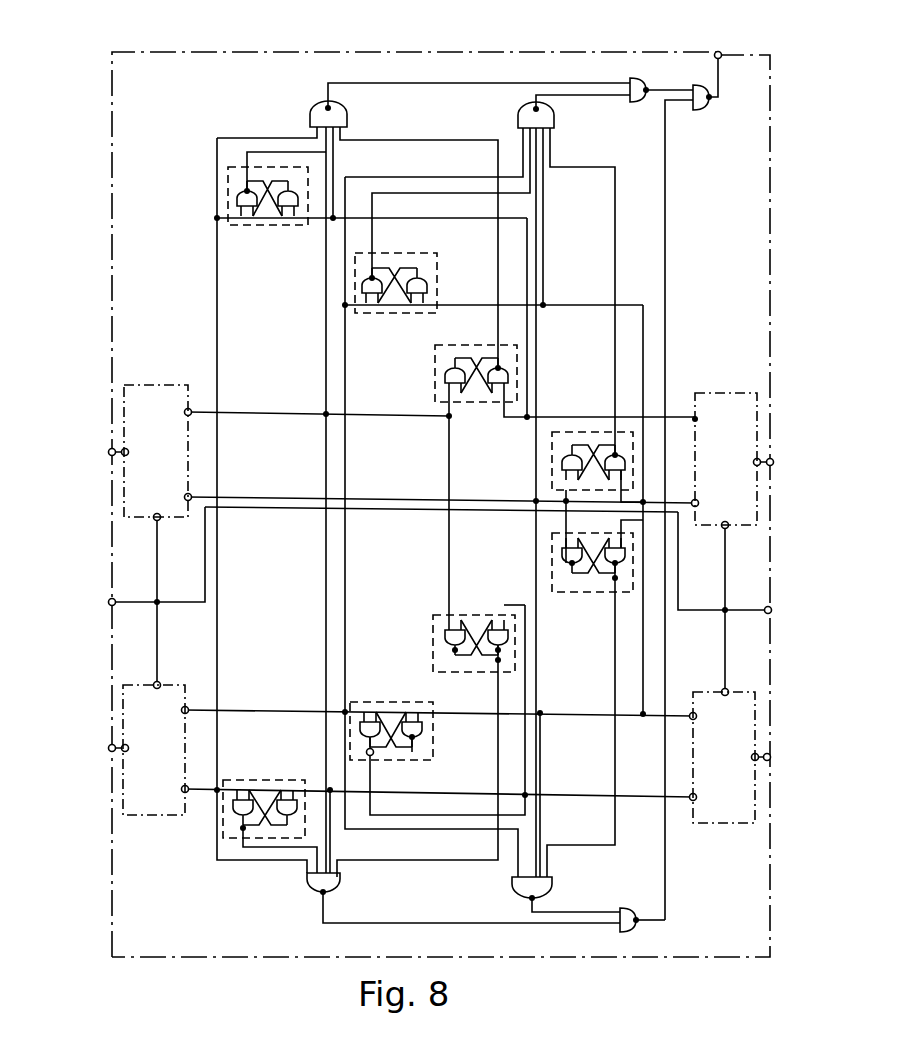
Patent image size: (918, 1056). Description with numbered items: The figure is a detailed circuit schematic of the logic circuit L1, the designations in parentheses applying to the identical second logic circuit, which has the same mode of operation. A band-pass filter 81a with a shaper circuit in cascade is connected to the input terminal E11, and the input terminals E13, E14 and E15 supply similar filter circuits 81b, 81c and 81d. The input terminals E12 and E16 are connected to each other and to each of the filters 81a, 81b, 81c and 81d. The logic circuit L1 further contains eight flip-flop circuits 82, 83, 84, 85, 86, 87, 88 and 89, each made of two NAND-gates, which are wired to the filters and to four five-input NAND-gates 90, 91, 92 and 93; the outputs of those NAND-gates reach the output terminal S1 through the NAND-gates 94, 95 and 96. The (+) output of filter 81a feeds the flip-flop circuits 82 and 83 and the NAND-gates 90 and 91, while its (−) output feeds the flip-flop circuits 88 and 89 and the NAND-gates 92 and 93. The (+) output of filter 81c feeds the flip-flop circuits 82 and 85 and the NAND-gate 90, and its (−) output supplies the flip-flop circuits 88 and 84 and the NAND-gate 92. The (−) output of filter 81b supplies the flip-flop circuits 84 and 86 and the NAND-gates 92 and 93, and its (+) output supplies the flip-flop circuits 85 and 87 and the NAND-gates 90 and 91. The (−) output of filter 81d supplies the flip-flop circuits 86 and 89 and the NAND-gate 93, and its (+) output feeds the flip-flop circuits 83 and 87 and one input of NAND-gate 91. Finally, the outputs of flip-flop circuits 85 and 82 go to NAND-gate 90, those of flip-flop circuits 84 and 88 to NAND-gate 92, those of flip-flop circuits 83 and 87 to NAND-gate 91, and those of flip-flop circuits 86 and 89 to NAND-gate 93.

The filter 81a is at (160, 386).
The filter circuit 81b is at (155, 816).
The filter circuit 81c is at (725, 393).
The filter circuit 81d is at (725, 824).
The flip-flop circuit 82 is at (435, 372).
The flip-flop circuit 83 is at (433, 643).
The flip-flop circuit 84 is at (437, 275).
The flip-flop circuit 85 is at (270, 226).
The flip-flop circuit 86 is at (432, 761).
The flip-flop circuit 87 is at (293, 780).
The flip-flop circuit 88 is at (552, 452).
The flip-flop circuit 89 is at (552, 562).
The NAND-gate 90 is at (316, 112).
The NAND-gate 91 is at (306, 888).
The NAND-gate 92 is at (521, 110).
The NAND-gate 93 is at (516, 896).
The NAND-gate 94 is at (636, 930).
The NAND-gate 95 is at (637, 102).
The NAND-gate 96 is at (705, 106).
The logic circuit L1 is at (267, 87).
The output terminal S1 is at (717, 52).
The input terminal E11 is at (110, 451).
The input terminal E12 is at (110, 601).
The input terminal E13 is at (110, 747).
The input terminal E14 is at (772, 461).
The input terminal E15 is at (770, 756).
The input terminal E16 is at (771, 609).